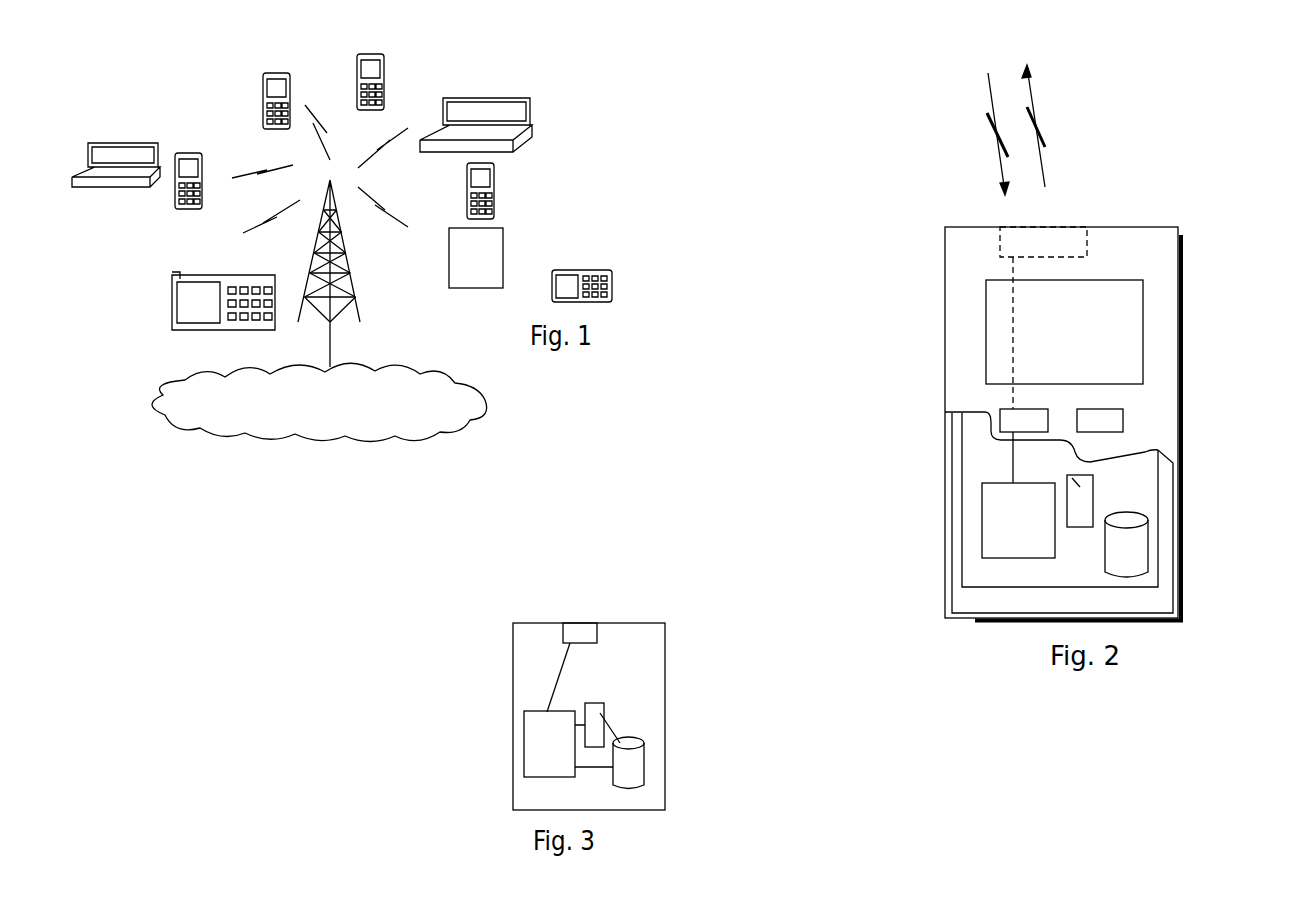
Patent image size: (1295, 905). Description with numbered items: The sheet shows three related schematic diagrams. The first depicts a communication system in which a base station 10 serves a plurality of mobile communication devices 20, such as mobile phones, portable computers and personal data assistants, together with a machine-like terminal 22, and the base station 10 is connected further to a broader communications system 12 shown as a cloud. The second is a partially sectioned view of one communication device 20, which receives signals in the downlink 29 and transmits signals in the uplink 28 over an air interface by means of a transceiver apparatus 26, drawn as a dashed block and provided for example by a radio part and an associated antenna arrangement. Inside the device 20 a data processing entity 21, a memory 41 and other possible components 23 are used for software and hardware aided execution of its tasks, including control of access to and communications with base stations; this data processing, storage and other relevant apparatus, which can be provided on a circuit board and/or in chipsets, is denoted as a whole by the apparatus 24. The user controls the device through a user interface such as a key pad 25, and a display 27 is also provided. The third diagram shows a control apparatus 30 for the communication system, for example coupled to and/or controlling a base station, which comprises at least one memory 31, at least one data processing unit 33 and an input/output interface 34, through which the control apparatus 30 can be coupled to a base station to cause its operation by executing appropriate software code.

In FIG. 1, the base station 10 is at (353, 293).
In FIG. 1, the communications system 12 is at (180, 385).
In FIG. 1, the mobile communication device 20 is at (262, 108).
In FIG. 2, the mobile communication device 20 is at (945, 262).
In FIG. 1, the machine-like terminal 22 is at (477, 248).
In FIG. 2, the data processing entity 21 is at (985, 507).
In FIG. 2, the other possible components 23 is at (1067, 475).
In FIG. 2, the data processing/storage apparatus 24 is at (982, 573).
In FIG. 2, the key pad 25 is at (1002, 420).
In FIG. 2, the transceiver apparatus 26 is at (1080, 238).
In FIG. 2, the display 27 is at (1000, 322).
In FIG. 2, the uplink 28 is at (1045, 120).
In FIG. 2, the downlink 29 is at (990, 103).
In FIG. 3, the control apparatus 30 is at (506, 623).
In FIG. 3, the memory 31 is at (617, 785).
In FIG. 3, the data processing unit 33 is at (592, 712).
In FIG. 3, the input/output interface 34 is at (585, 636).
In FIG. 2, the memory 41 is at (1122, 552).